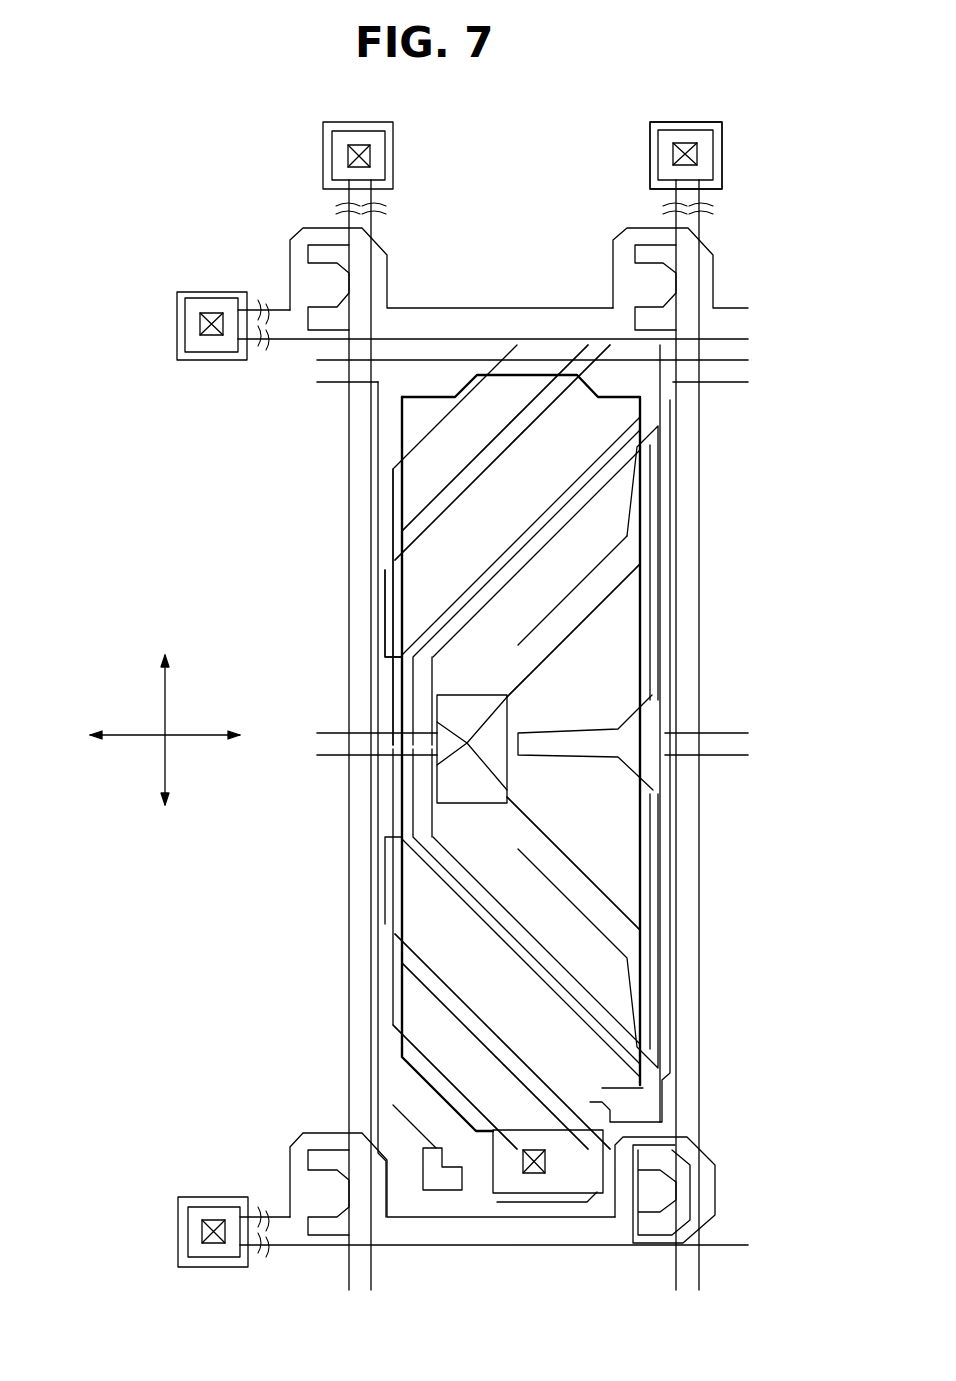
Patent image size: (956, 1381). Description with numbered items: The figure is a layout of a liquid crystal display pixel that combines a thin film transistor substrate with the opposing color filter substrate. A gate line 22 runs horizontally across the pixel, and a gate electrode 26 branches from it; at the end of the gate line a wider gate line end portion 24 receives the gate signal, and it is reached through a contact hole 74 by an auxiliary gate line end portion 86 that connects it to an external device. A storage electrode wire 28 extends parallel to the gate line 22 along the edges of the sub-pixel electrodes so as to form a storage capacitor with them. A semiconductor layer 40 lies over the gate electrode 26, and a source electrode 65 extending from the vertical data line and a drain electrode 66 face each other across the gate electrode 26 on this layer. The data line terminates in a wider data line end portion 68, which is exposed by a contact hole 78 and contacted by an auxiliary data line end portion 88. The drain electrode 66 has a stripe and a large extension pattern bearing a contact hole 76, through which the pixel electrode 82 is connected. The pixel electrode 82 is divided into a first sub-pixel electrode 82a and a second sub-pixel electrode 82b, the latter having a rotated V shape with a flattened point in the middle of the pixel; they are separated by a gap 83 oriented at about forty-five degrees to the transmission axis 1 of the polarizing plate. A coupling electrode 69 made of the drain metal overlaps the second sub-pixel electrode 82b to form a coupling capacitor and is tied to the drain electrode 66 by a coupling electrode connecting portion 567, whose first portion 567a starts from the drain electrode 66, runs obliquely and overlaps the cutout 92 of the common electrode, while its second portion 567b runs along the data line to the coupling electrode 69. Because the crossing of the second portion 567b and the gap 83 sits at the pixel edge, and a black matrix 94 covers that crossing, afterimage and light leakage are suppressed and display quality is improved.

The transmission axis 1 is at (120, 682).
The gate line 22 is at (422, 1248).
The gate line end portion 24 is at (194, 1200).
The gate electrode 26 is at (705, 1160).
The storage electrode wire 28 is at (327, 386).
The semiconductor layer 40 is at (705, 1183).
The source electrode 65 is at (648, 1245).
The drain electrode 66 is at (560, 1204).
The data line end portion 68 is at (670, 130).
The coupling electrode 69 is at (509, 712).
The contact hole 74 is at (200, 1232).
The contact hole 76 is at (533, 1178).
The contact hole 78 is at (672, 152).
The pixel electrode 82 is at (770, 470).
The first sub-pixel electrode 82a is at (573, 520).
The second sub-pixel electrode 82b is at (633, 492).
The gap 83 is at (466, 891).
The auxiliary gate line end portion 86 is at (196, 1267).
The auxiliary data line end portion 88 is at (710, 121).
The cutout 92 is at (440, 494).
The black matrix 94 is at (395, 680).
The coupling electrode connecting portion 567 is at (262, 905).
The first portion 567a is at (425, 958).
The second portion 567b is at (380, 874).